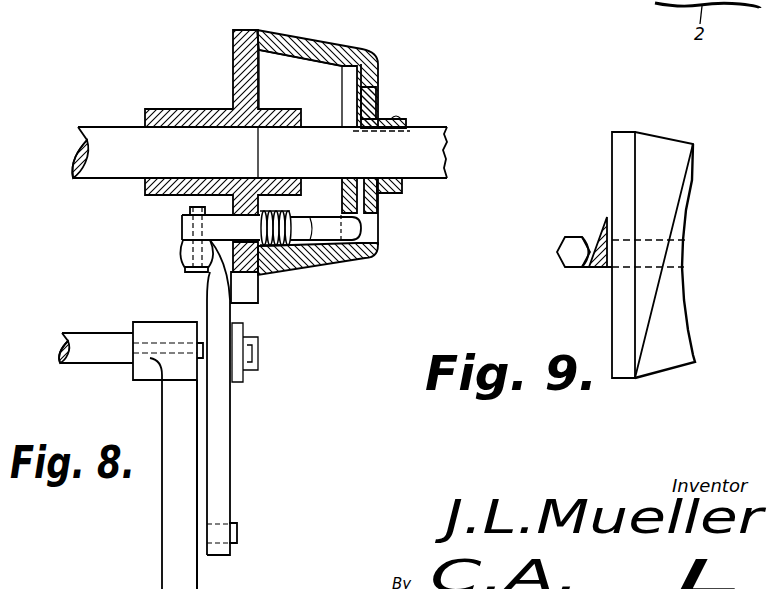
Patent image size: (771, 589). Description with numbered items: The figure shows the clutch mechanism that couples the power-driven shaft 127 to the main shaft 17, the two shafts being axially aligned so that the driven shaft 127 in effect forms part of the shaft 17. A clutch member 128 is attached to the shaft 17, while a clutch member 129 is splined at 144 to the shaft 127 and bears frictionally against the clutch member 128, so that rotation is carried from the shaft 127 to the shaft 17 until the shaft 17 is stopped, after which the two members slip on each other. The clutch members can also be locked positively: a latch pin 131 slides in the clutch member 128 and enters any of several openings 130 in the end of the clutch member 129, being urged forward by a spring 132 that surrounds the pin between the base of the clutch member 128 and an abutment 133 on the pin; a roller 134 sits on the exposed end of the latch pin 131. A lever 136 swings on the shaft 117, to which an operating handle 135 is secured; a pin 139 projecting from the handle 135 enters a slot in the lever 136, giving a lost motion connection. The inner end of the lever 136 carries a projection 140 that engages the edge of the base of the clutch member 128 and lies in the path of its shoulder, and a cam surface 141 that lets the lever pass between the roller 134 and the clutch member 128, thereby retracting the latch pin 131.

In FIG. 8, the main shaft 17 is at (106, 135).
In FIG. 8, the driven shaft 127 is at (449, 134).
In FIG. 8, the clutch member 128 is at (303, 56).
In FIG. 8, the clutch member 129 is at (320, 45).
In FIG. 9, the clutch member 129 is at (678, 141).
In FIG. 8, the openings 130 is at (378, 74).
In FIG. 8, the spline 144 is at (407, 123).
In FIG. 8, the abutment 133 is at (292, 220).
In FIG. 8, the latch pin 131 is at (338, 262).
In FIG. 8, the spring 132 is at (285, 273).
In FIG. 8, the roller 134 is at (182, 249).
In FIG. 9, the roller 134 is at (559, 241).
In FIG. 8, the cam surface 141 is at (208, 275).
In FIG. 9, the cam surface 141 is at (598, 232).
In FIG. 8, the projection 140 is at (252, 298).
In FIG. 8, the lever 136 is at (224, 458).
In FIG. 8, the pin 139 is at (238, 536).
In FIG. 8, the operating member or handle 135 is at (165, 567).
In FIG. 8, the shaft 117 is at (95, 358).